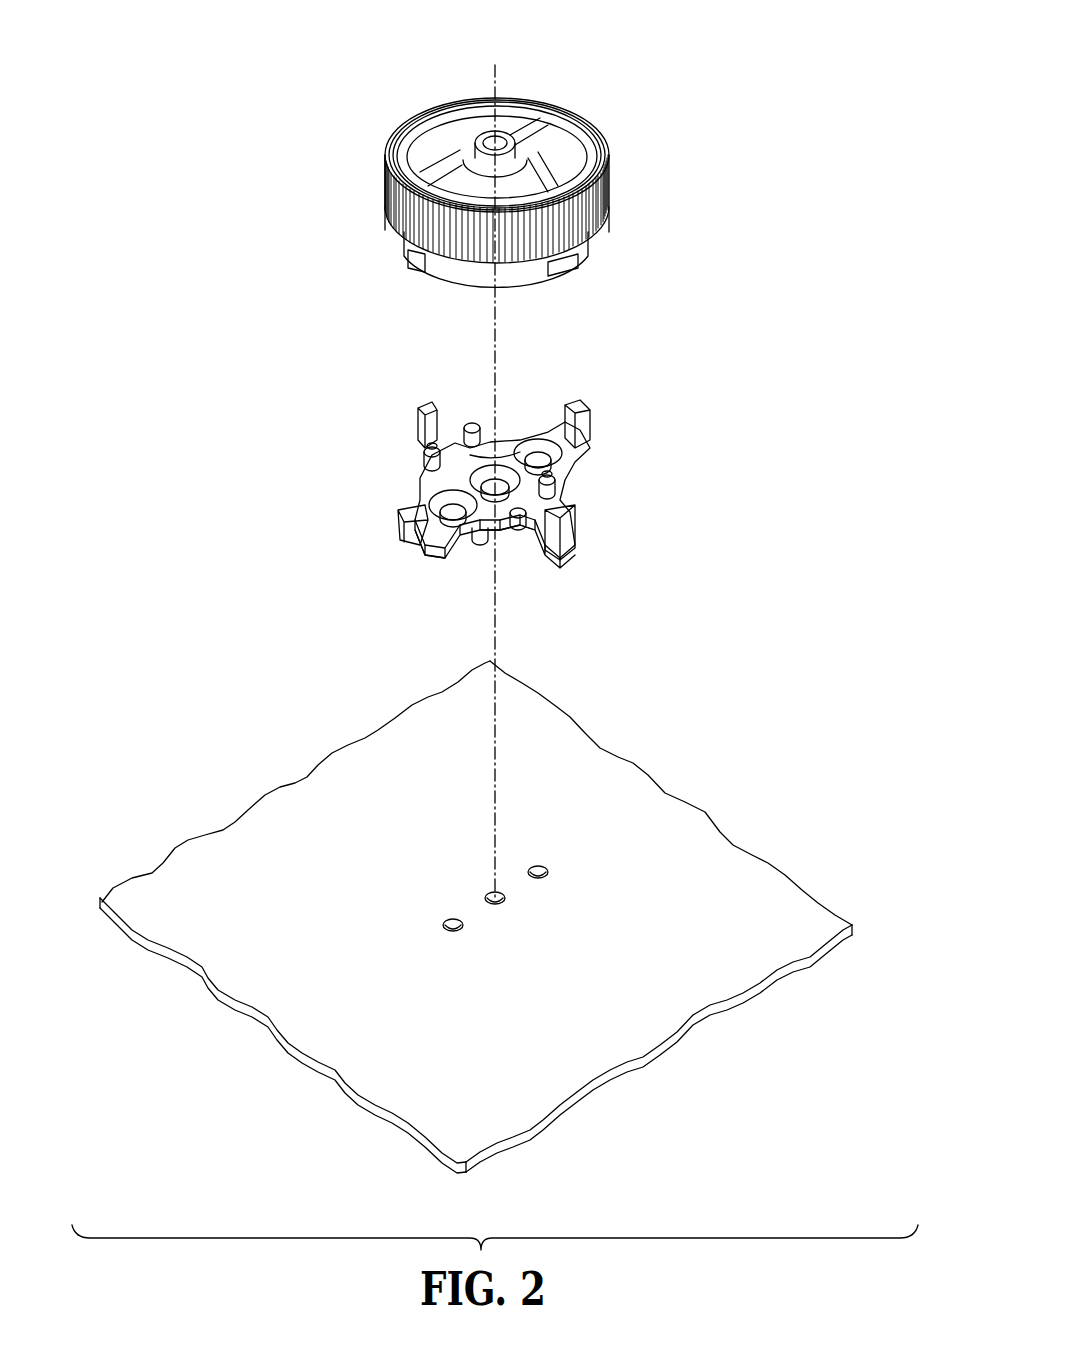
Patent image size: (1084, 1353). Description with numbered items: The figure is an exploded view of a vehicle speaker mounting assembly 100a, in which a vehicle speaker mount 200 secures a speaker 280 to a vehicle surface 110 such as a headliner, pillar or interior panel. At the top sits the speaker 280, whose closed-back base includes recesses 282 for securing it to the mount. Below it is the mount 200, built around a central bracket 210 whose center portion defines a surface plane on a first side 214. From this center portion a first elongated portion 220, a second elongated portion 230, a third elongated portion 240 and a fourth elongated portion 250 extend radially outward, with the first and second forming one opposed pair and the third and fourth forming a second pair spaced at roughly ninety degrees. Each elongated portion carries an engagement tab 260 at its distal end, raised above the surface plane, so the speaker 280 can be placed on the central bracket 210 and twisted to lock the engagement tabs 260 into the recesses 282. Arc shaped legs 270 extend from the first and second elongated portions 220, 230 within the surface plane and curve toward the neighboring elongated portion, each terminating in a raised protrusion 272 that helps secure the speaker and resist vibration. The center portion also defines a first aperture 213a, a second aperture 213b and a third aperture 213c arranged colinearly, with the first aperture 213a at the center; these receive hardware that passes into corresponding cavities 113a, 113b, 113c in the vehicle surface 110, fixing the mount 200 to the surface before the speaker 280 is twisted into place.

The vehicle speaker mounting assembly 100a is at (320, 72).
The speaker 280 is at (615, 98).
The recesses 282 is at (398, 256).
The vehicle speaker mount 200 is at (660, 350).
The central bracket 210 is at (403, 471).
The first side 214 is at (537, 450).
The first aperture 213a is at (499, 487).
The second aperture 213b is at (457, 518).
The third aperture 213c is at (556, 440).
The fourth elongated portion 250 is at (421, 445).
The second elongated portion 230 is at (593, 450).
The engagement tab 260 is at (400, 517).
The first elongated portion 220 is at (428, 548).
The third elongated portion 240 is at (510, 523).
The arc shaped leg 270 is at (477, 422).
The protrusion 272 is at (473, 424).
The vehicle surface 110 is at (748, 852).
The cavity 113a is at (486, 894).
The cavity 113b is at (444, 922).
The cavity 113c is at (543, 868).